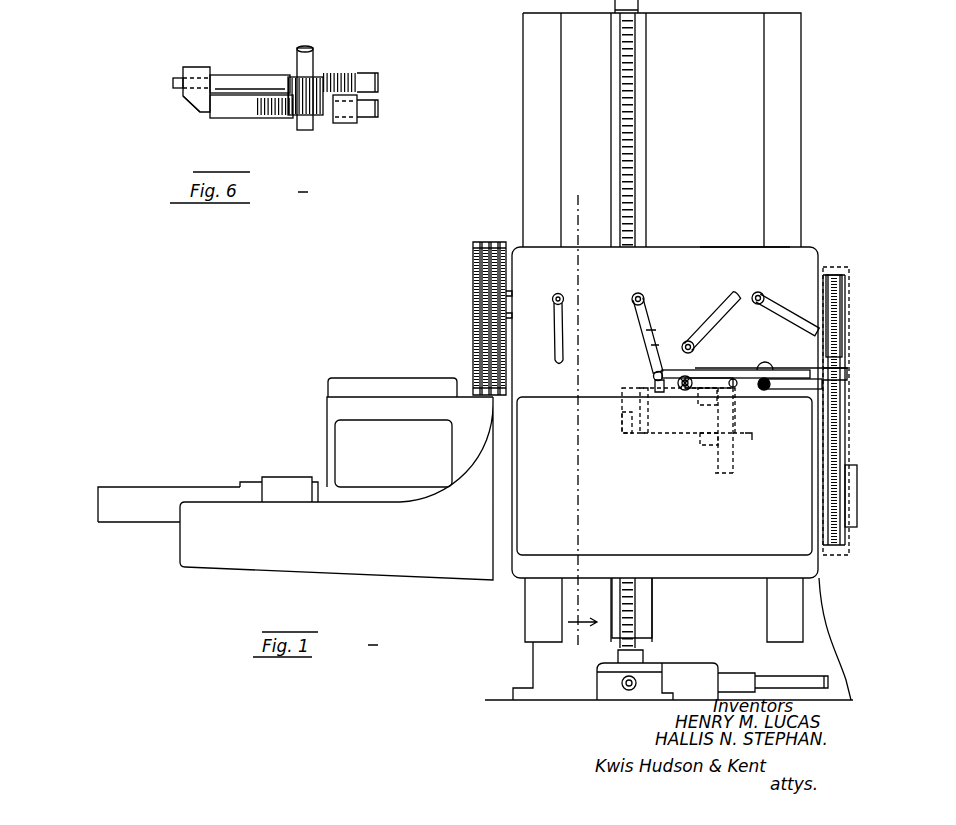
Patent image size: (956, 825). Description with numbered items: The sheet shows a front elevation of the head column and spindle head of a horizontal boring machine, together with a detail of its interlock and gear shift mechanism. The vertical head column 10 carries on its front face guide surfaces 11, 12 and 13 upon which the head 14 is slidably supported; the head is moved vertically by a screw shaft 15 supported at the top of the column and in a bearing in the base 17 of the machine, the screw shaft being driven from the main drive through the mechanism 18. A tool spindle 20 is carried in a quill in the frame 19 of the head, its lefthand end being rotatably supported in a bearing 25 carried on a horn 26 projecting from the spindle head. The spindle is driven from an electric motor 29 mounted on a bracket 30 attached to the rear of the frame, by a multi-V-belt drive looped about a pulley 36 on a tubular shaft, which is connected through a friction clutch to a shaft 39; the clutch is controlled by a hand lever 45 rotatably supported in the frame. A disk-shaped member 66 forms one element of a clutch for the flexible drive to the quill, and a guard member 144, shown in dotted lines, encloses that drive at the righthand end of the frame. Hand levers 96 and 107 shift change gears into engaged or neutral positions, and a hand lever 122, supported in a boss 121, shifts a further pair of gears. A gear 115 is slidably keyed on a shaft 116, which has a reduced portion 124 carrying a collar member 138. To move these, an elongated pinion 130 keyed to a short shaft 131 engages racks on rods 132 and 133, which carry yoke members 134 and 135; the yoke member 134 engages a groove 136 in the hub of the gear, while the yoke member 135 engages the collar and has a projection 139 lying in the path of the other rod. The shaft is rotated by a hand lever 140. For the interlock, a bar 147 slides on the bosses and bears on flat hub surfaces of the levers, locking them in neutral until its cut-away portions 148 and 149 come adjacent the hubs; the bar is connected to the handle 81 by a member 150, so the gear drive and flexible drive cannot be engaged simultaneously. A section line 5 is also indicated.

In FIG. 1, the section line 5 is at (582, 417).
In FIG. 1, the vertical head column 10 is at (752, 192).
In FIG. 1, the guide surface 11 is at (550, 106).
In FIG. 1, the guide surface 12 is at (647, 71).
In FIG. 1, the guide surface 13 is at (771, 62).
In FIG. 1, the head 14 is at (663, 291).
In FIG. 1, the screw shaft 15 is at (639, 132).
In FIG. 1, the base 17 is at (502, 700).
In FIG. 1, the drive mechanism 18 is at (697, 662).
In FIG. 1, the frame 19 is at (762, 248).
In FIG. 1, the tool spindle 20 is at (147, 488).
In FIG. 1, the bearing 25 is at (279, 478).
In FIG. 1, the horn 26 is at (300, 548).
In FIG. 1, the electric motor 29 is at (380, 377).
In FIG. 1, the bracket 30 is at (338, 398).
In FIG. 1, the pulley 36 is at (474, 247).
In FIG. 1, the shaft 39 is at (512, 305).
In FIG. 1, the hand lever 45 is at (554, 331).
In FIG. 1, the disk-shaped member 66 is at (847, 328).
In FIG. 1, the handle 81 is at (647, 331).
In FIG. 1, the hand lever 96 is at (710, 333).
In FIG. 1, the hand lever 107 is at (790, 313).
In FIG. 1, the gear 115 is at (717, 474).
In FIG. 1, the shaft 116 is at (750, 452).
In FIG. 1, the boss 121 is at (766, 391).
In FIG. 1, the hand lever 122 is at (800, 392).
In FIG. 1, the reduced portion 124 is at (672, 438).
In FIG. 6, the elongated pinion 130 is at (300, 114).
In FIG. 1, the elongated pinion 130 is at (686, 377).
In FIG. 6, the short shaft 131 is at (313, 56).
In FIG. 1, the short shaft 131 is at (656, 388).
In FIG. 6, the rod 132 is at (250, 117).
In FIG. 6, the rod 133 is at (253, 60).
In FIG. 6, the yoke member 134 is at (359, 124).
In FIG. 1, the yoke member 134 is at (700, 401).
In FIG. 6, the yoke member 135 is at (190, 66).
In FIG. 1, the yoke member 135 is at (634, 406).
In FIG. 1, the groove 136 is at (703, 453).
In FIG. 1, the collar member 138 is at (630, 440).
In FIG. 6, the projection 139 is at (193, 105).
In FIG. 1, the hand lever 140 is at (763, 440).
In FIG. 1, the guard member 144 is at (850, 440).
In FIG. 1, the bar 147 is at (727, 362).
In FIG. 1, the cut-away portion 148 is at (846, 368).
In FIG. 1, the cut-away portion 149 is at (745, 372).
In FIG. 1, the member 150 is at (654, 372).